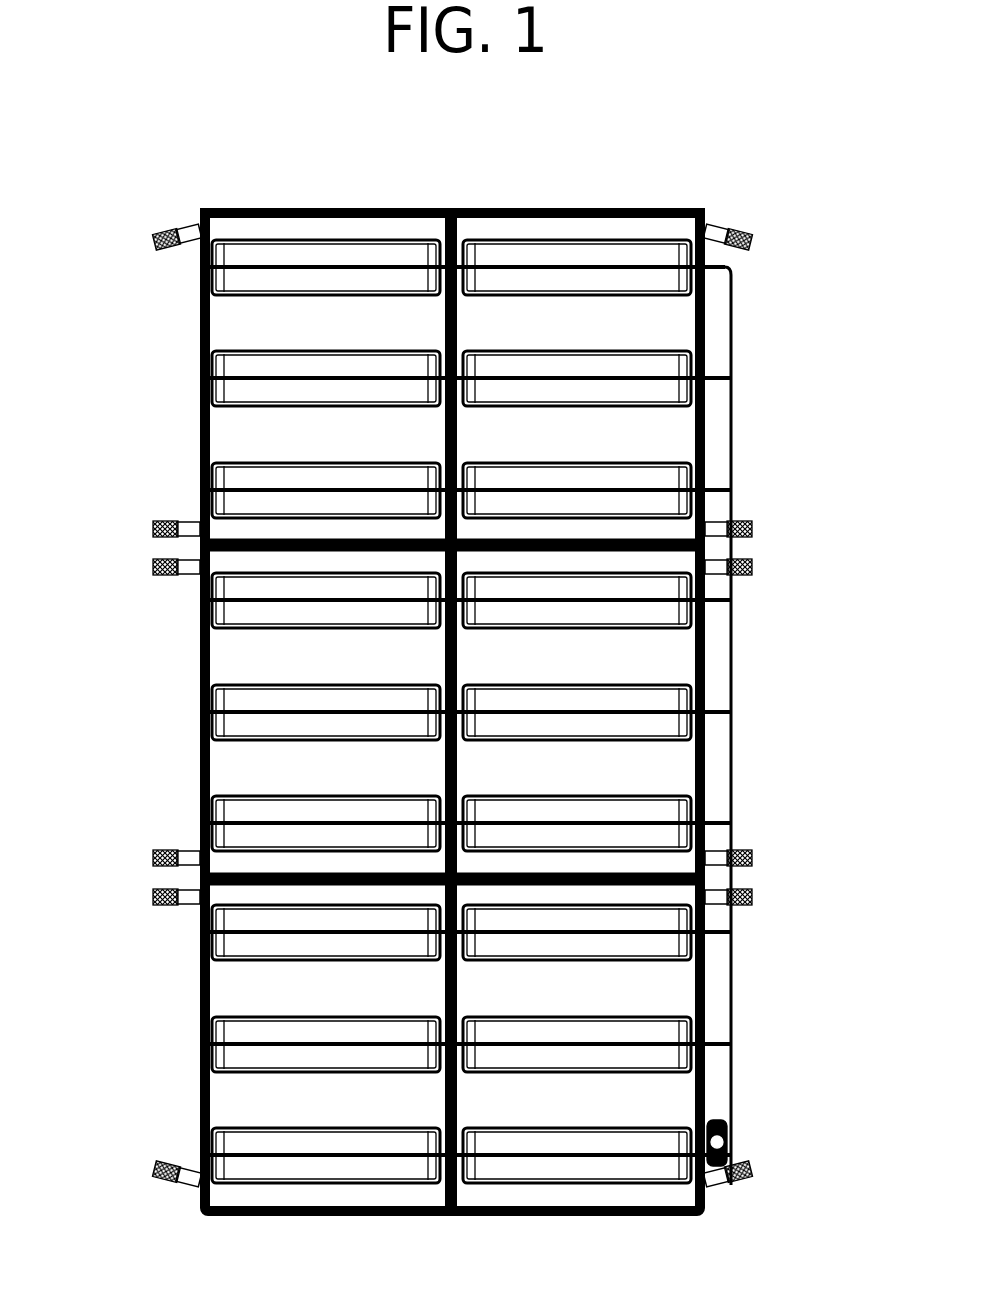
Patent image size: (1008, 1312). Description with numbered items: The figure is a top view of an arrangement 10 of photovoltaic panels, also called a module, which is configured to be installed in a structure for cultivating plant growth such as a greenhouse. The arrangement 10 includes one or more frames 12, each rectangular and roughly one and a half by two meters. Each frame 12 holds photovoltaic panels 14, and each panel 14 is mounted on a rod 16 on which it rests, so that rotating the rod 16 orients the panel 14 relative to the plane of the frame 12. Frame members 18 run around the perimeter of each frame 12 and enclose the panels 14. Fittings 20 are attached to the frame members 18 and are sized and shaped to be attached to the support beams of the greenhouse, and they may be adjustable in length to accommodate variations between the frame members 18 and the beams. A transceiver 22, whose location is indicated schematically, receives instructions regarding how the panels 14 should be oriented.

The arrangement of photovoltaic panels 10 is at (300, 99).
The frame 12 is at (200, 398).
The photovoltaic panel 14 is at (261, 284).
The rod 16 is at (345, 266).
The frame member 18 is at (610, 205).
The fitting 20 is at (753, 235).
The transceiver 22 is at (733, 1158).